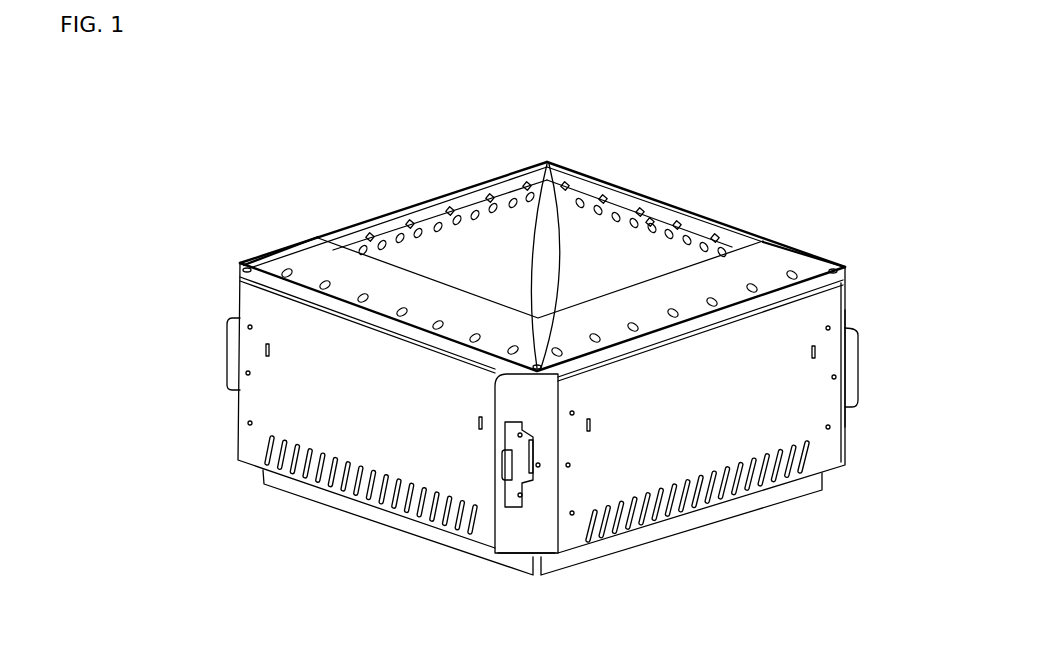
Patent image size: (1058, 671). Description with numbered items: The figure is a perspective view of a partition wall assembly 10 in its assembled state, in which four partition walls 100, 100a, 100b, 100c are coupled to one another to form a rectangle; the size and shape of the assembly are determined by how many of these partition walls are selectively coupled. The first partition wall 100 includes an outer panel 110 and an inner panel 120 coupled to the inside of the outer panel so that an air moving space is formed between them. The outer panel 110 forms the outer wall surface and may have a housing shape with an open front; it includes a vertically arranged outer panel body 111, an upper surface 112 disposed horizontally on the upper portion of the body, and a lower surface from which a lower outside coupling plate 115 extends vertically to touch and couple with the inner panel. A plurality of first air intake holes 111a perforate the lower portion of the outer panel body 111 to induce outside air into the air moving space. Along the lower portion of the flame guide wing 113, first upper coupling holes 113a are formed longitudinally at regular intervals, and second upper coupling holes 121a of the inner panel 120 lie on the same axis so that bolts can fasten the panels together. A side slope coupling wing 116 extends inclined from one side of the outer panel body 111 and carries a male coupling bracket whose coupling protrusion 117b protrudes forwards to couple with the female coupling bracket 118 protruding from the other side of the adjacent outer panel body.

The partition wall assembly 10 is at (781, 157).
The first partition wall 100 is at (230, 545).
The partition wall 100a is at (800, 398).
The partition wall 100b is at (763, 241).
The partition wall 100c is at (393, 210).
The outer panel 110 is at (143, 250).
The outer panel body 111 is at (273, 403).
The first air intake holes 111a is at (372, 503).
The upper surface 112 is at (287, 288).
The flame guide wing 113 is at (260, 265).
The first upper coupling holes 113a is at (362, 297).
The lower outside coupling plate 115 is at (262, 487).
The side slope coupling wing 116 is at (530, 530).
The coupling protrusion 117b is at (500, 457).
The female coupling bracket 118 is at (516, 508).
The inner panel 120 is at (612, 247).
The second upper coupling holes 121a is at (651, 222).